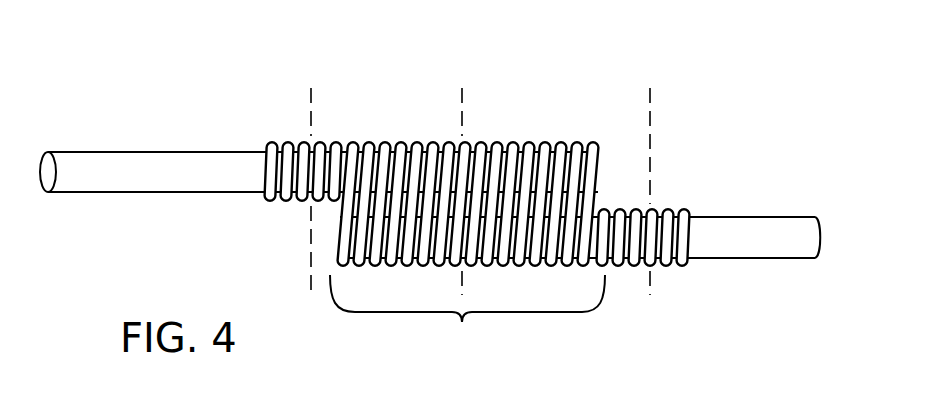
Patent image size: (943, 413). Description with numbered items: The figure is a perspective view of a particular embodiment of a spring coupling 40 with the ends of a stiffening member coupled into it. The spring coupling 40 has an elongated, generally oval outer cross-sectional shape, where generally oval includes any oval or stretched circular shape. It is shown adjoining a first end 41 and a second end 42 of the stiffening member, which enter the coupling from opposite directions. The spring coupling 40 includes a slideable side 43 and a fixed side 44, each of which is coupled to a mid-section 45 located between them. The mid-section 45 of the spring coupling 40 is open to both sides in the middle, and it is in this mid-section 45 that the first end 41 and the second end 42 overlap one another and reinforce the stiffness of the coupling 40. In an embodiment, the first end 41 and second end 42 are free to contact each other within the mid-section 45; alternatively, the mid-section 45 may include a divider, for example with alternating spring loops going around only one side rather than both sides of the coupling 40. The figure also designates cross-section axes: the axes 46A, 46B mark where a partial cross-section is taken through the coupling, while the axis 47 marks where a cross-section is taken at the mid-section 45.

The spring coupling 40 is at (548, 102).
The first end 41 is at (194, 152).
The second end 42 is at (748, 222).
The slideable side 43 is at (288, 203).
The fixed side 44 is at (686, 208).
The mid-section 45 is at (467, 313).
The axis 46A is at (652, 122).
The axis 46B is at (311, 108).
The axis 47 is at (462, 105).